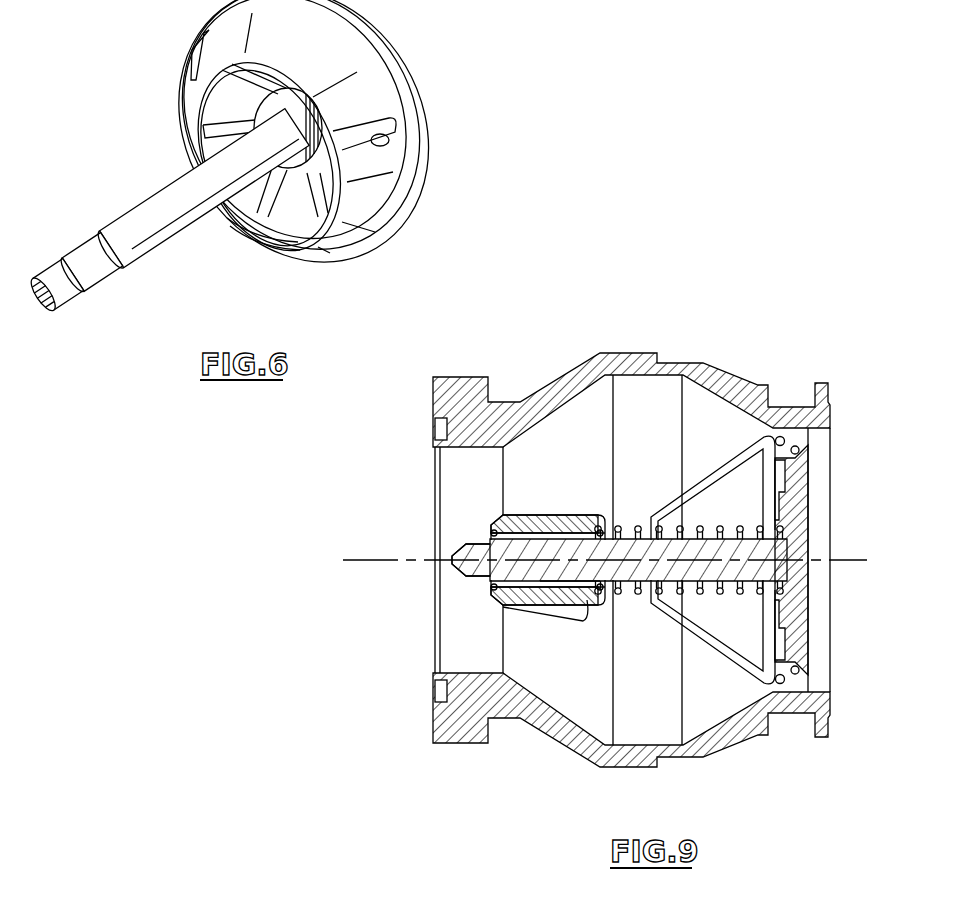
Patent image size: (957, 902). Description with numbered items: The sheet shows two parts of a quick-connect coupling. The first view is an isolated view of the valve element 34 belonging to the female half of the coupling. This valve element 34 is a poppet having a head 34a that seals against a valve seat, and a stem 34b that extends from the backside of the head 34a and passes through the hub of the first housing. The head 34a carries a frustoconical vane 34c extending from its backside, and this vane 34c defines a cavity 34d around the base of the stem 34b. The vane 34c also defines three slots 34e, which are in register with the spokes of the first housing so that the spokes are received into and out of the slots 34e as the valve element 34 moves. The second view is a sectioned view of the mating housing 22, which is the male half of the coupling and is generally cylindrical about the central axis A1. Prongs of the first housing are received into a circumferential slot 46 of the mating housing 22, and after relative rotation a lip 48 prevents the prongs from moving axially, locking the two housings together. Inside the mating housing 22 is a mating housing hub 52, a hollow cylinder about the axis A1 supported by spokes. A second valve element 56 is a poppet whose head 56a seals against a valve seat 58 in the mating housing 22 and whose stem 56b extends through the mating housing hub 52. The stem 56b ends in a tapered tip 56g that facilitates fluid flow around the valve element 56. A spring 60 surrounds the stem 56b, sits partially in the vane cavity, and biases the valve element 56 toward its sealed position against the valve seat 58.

In FIG. 9, the mating housing 22 is at (570, 757).
In FIG. 9, the circumferential slot 46 is at (794, 398).
In FIG. 9, the lip 48 is at (828, 383).
In FIG. 9, the mating housing hub 52 is at (526, 514).
In FIG. 9, the second valve element 56 is at (661, 600).
In FIG. 9, the head 56a is at (762, 675).
In FIG. 9, the stem 56b is at (563, 572).
In FIG. 9, the tapered tip 56g is at (462, 546).
In FIG. 9, the valve seat 58 is at (800, 658).
In FIG. 9, the spring 60 is at (638, 527).
In FIG. 9, the central axis A1 is at (392, 563).
In FIG. 6, the valve element 34 is at (169, 270).
In FIG. 6, the head 34a is at (358, 266).
In FIG. 6, the stem 34b is at (201, 220).
In FIG. 6, the frustoconical vane 34c is at (357, 90).
In FIG. 6, the cavity 34d is at (314, 220).
In FIG. 6, the slots 34e is at (196, 52).